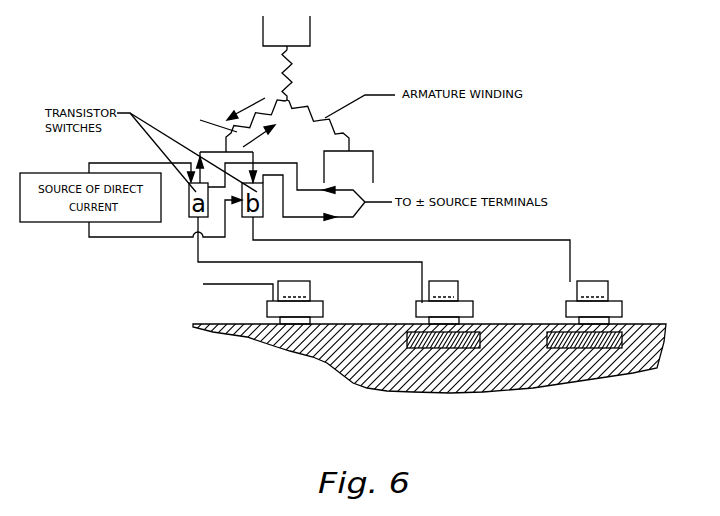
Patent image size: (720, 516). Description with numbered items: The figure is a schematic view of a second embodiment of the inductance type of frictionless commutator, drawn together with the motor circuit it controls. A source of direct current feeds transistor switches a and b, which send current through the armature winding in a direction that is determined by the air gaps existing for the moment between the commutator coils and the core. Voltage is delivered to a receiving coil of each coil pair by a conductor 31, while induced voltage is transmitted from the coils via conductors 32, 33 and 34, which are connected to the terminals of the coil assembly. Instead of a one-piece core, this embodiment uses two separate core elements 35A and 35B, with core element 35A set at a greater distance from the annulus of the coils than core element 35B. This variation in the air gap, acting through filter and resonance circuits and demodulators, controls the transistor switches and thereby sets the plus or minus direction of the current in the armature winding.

The conductor 31 is at (473, 302).
The conductor 32 is at (232, 285).
The conductor 33 is at (425, 268).
The conductor 34 is at (571, 240).
The core element 35A is at (358, 385).
The core element 35B is at (600, 342).